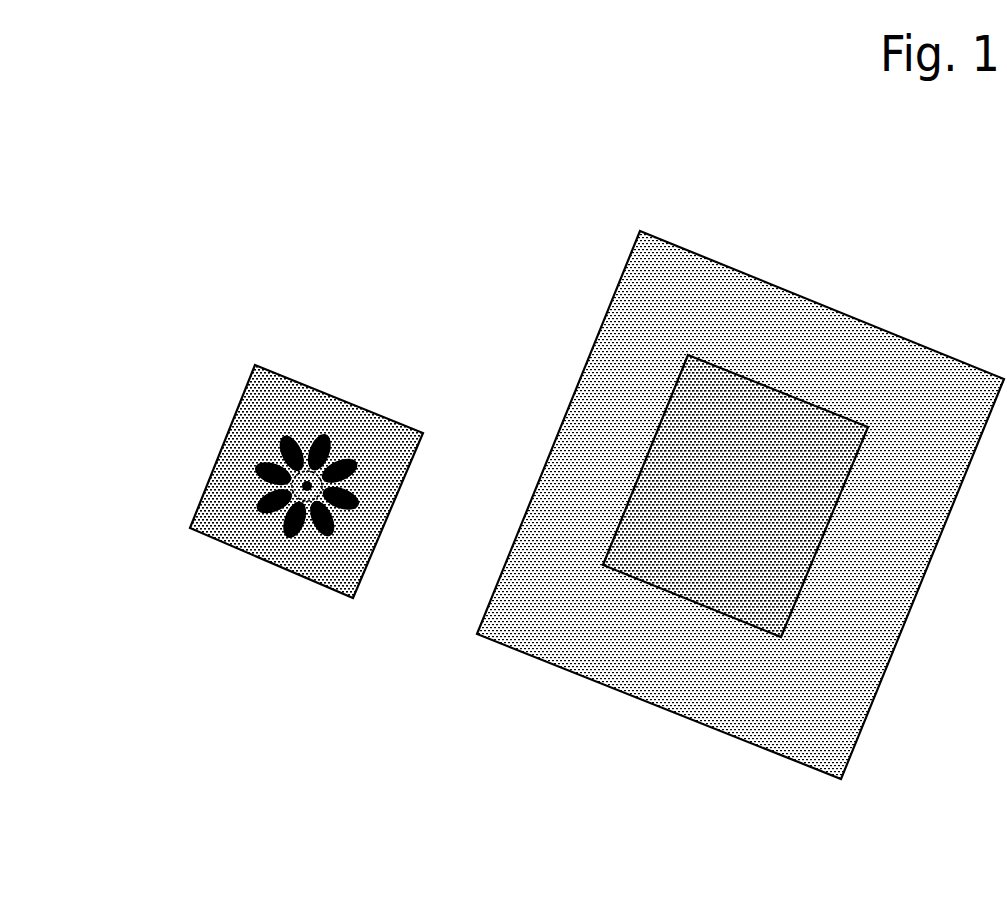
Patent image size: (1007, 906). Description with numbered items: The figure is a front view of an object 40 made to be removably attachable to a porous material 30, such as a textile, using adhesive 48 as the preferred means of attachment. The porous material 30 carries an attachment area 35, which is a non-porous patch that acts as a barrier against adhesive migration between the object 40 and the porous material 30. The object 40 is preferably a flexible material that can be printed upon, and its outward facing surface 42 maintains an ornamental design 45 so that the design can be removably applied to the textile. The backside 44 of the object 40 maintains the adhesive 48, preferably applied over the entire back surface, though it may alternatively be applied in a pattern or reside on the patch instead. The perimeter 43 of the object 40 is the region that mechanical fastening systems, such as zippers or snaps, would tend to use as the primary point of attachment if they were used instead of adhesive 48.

The porous material 30 is at (812, 258).
The attachment area 35 is at (751, 500).
The object 40 is at (327, 461).
The outward facing surface 42 is at (358, 525).
The perimeter 43 is at (225, 415).
The backside 44 is at (238, 518).
The ornamental design 45 is at (325, 433).
The adhesive 48 is at (380, 452).